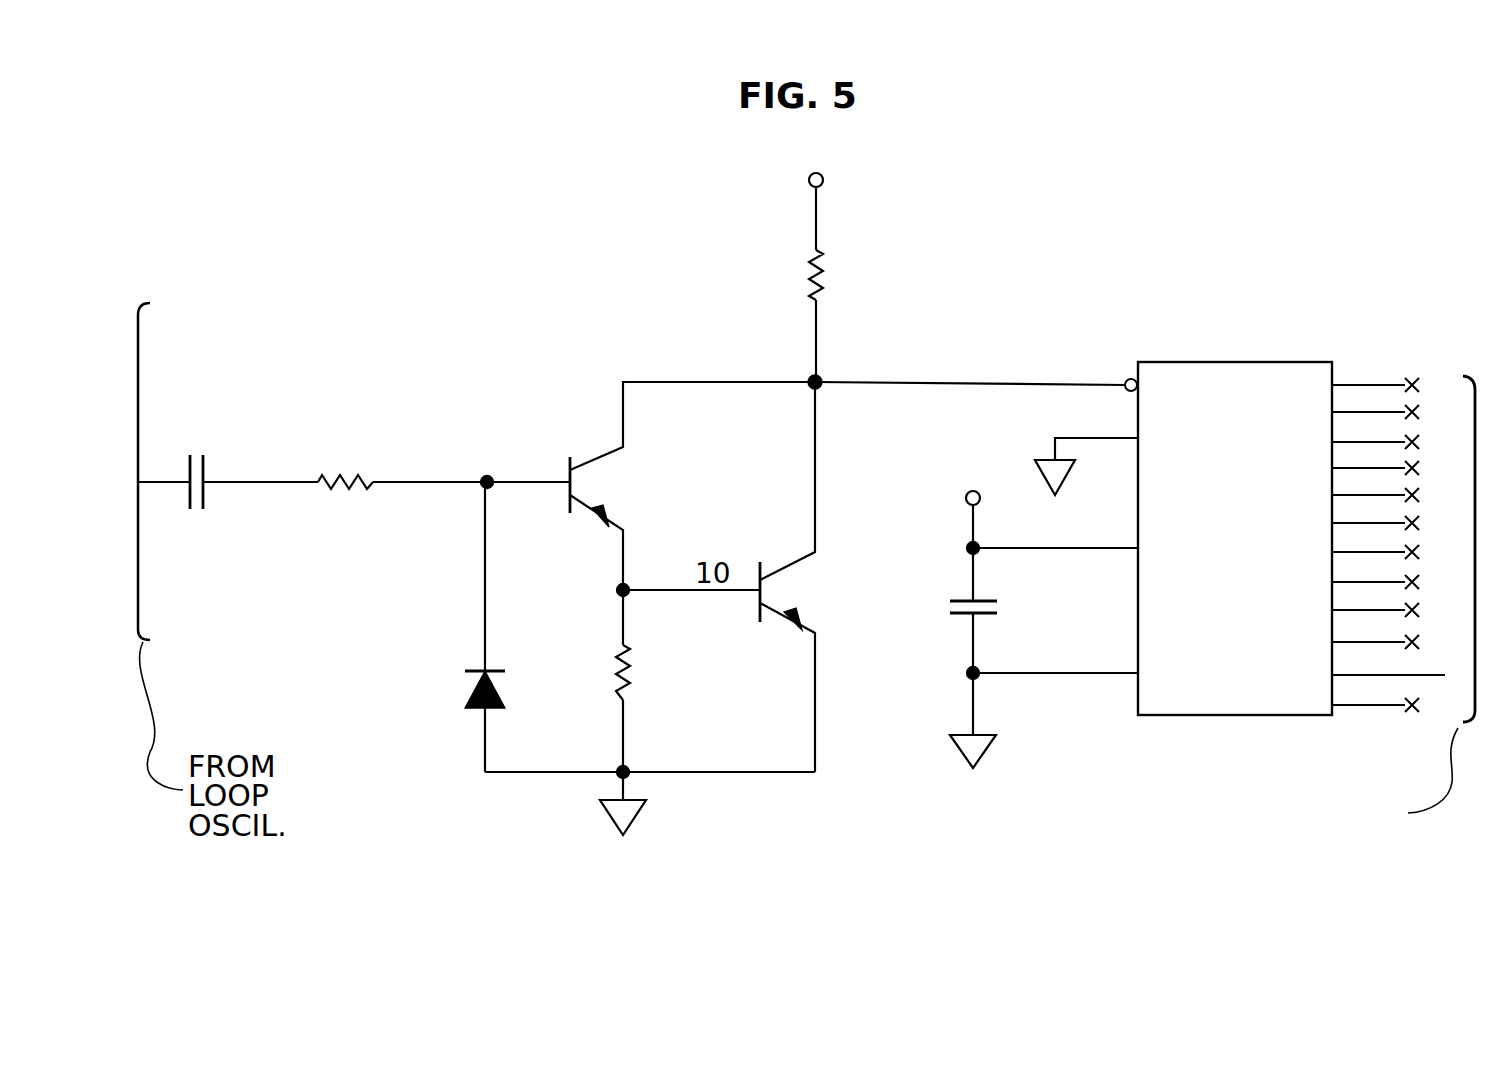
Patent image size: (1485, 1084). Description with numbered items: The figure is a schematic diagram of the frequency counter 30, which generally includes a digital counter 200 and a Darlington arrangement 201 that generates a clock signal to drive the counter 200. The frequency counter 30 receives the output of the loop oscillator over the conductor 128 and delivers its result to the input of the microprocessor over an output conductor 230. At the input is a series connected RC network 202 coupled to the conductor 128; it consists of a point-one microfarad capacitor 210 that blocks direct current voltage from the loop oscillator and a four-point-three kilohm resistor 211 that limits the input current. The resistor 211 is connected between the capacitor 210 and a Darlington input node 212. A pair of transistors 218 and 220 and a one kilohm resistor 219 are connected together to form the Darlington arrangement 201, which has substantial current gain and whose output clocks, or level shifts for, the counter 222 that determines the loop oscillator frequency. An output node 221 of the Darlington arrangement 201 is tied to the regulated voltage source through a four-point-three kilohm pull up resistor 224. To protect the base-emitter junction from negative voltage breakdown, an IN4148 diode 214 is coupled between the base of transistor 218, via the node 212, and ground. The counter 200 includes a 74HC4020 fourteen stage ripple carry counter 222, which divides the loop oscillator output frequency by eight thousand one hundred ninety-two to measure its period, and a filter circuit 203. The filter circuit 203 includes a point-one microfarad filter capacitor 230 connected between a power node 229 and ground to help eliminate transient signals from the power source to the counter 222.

The conductor 128 is at (152, 480).
The capacitor 210 is at (198, 479).
The resistor 211 is at (322, 488).
The Darlington input node 212 is at (483, 488).
The diode 214 is at (465, 695).
The transistor 218 is at (596, 458).
The resistor 219 is at (648, 722).
The transistor 220 is at (808, 620).
The output node 221 is at (822, 378).
The pull up resistor 224 is at (810, 256).
The power node 229 is at (968, 553).
The output conductor 230 is at (960, 598).
The Darlington arrangement 201 is at (956, 272).
The RC network 202 is at (434, 428).
The filter circuit 203 is at (1062, 742).
The digital counter 200 is at (1418, 249).
The fourteen stage ripple carry counter 222 is at (1241, 362).
The frequency counter 30 is at (466, 846).